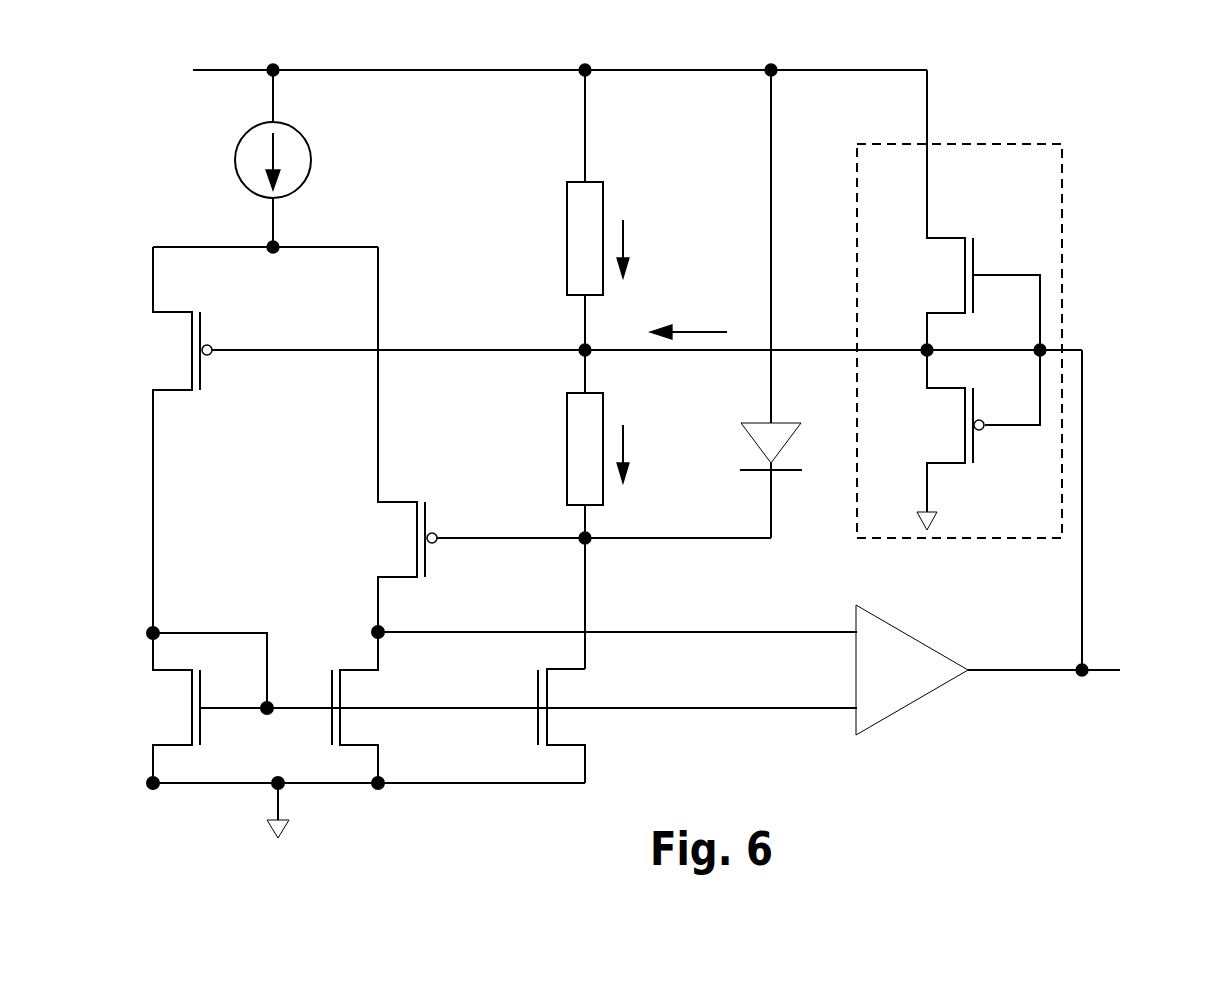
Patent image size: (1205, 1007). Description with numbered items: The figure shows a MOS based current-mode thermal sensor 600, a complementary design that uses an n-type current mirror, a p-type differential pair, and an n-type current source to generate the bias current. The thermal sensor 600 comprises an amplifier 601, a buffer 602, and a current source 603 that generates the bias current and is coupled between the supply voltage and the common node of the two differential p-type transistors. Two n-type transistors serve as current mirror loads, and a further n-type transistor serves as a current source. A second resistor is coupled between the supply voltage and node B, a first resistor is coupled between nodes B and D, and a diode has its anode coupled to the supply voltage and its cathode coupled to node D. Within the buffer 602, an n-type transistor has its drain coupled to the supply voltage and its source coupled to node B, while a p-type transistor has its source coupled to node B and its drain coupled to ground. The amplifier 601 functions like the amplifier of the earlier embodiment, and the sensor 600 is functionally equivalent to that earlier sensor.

The MOS based current-mode thermal sensor 600 is at (1190, 187).
The amplifier 601 is at (988, 670).
The buffer 602 is at (959, 304).
The current source 603 is at (286, 197).